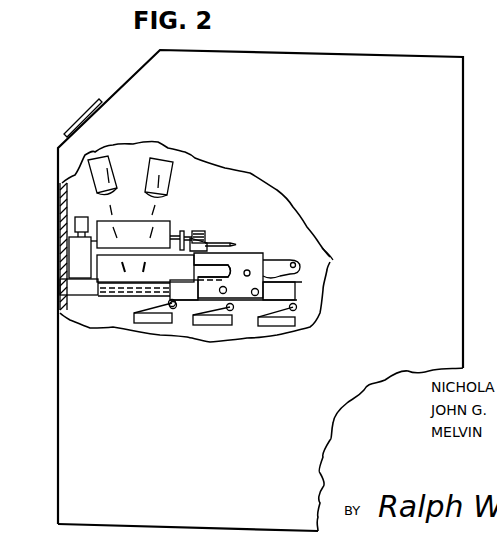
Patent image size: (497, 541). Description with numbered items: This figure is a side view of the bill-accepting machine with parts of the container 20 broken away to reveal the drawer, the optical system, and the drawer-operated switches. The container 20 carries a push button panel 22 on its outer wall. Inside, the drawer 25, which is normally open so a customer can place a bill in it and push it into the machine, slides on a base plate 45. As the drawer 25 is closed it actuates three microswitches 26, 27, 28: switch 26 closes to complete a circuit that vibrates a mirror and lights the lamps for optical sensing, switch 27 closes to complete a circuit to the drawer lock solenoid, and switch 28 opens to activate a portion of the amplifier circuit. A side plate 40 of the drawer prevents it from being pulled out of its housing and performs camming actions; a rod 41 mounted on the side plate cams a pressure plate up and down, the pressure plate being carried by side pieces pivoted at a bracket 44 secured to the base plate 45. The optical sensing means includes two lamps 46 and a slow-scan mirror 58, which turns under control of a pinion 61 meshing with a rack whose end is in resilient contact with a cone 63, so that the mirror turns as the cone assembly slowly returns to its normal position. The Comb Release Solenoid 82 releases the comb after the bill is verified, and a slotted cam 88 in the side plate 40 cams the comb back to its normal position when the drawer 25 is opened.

The container 20 is at (385, 63).
The push button panel 22 is at (68, 130).
The drawer 25 is at (60, 288).
The microswitch 26 is at (160, 318).
The microswitch 27 is at (215, 321).
The microswitch 28 is at (283, 322).
The side plate 40 is at (250, 262).
The rod 41 is at (258, 273).
The bracket 44 is at (335, 256).
The base plate 45 is at (115, 298).
The lamps 46 is at (150, 168).
The slow-scan mirror 58 is at (163, 240).
The pinion 61 is at (197, 232).
The cone 63 is at (210, 243).
The Comb Release Solenoid 82 is at (75, 218).
The slotted cam 88 is at (210, 270).